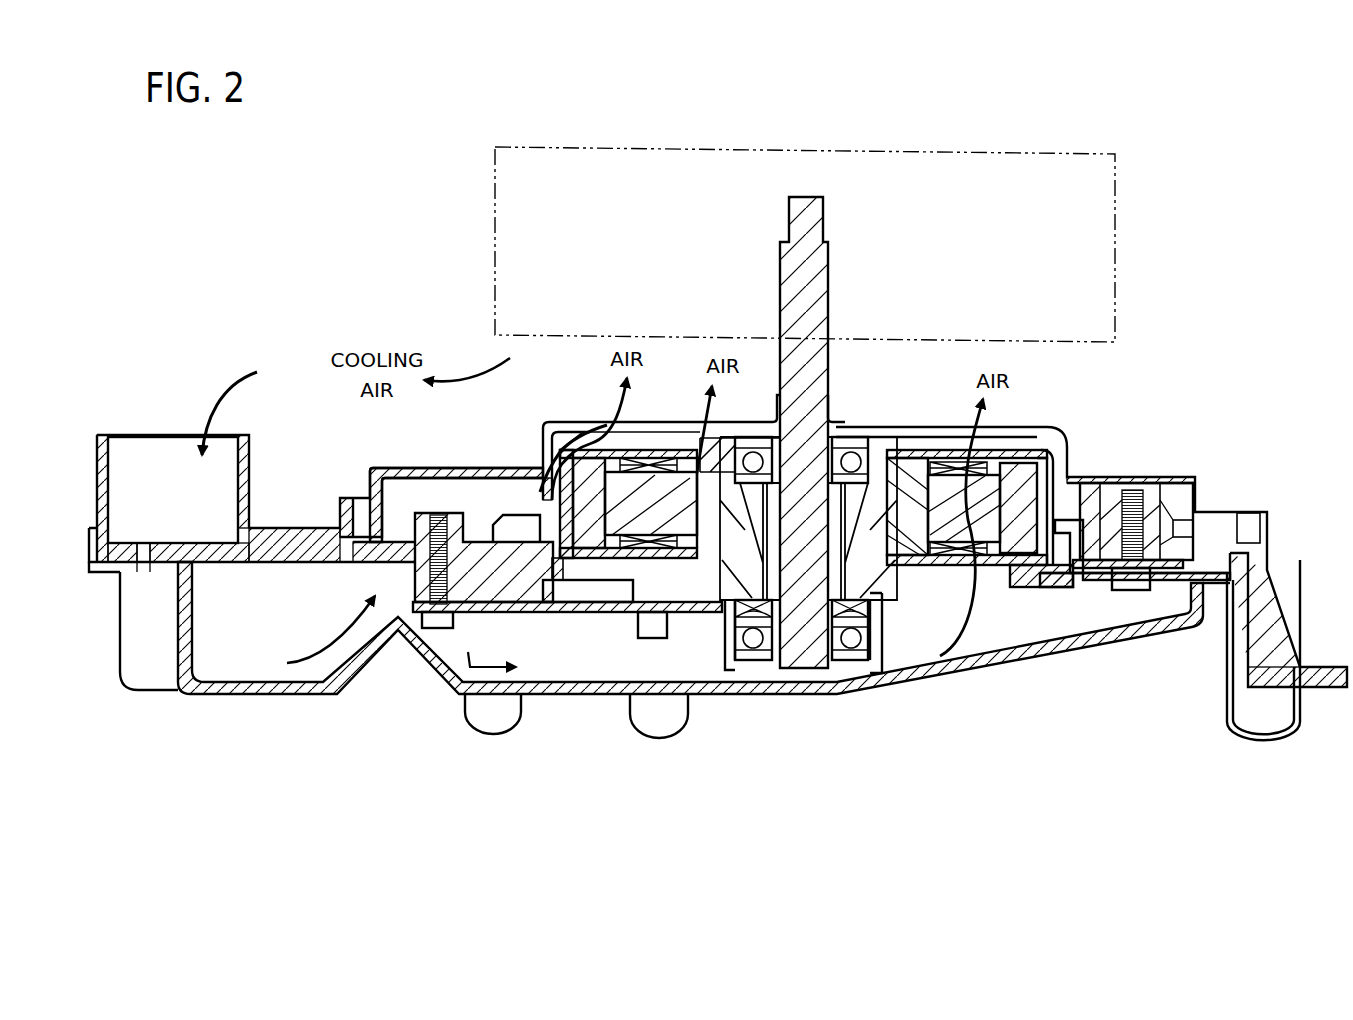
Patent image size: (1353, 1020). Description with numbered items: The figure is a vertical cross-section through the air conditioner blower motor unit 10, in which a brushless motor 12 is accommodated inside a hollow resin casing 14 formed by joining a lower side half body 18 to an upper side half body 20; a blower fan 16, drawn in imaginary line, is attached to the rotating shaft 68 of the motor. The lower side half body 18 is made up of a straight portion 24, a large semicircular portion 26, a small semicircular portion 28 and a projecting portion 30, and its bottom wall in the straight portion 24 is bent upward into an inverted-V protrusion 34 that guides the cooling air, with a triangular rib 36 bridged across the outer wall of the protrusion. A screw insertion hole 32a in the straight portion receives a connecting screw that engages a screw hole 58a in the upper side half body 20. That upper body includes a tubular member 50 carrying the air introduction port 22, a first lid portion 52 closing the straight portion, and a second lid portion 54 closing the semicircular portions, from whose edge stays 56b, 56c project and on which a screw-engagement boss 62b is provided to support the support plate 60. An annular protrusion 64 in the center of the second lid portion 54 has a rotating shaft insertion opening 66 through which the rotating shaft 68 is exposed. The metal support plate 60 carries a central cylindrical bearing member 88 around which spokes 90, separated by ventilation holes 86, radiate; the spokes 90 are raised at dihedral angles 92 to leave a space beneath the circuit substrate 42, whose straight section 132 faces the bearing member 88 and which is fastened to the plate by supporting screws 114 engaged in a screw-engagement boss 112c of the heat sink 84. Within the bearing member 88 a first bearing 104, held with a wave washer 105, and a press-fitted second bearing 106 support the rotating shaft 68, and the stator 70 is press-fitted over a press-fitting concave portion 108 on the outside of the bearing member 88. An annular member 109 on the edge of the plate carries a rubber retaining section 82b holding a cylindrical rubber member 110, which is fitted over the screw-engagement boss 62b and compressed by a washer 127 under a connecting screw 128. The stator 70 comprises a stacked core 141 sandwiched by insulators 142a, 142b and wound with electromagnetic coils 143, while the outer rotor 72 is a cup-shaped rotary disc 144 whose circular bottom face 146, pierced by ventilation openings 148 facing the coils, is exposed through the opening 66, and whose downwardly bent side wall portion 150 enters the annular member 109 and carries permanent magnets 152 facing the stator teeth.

The air conditioner blower motor unit 10 is at (246, 181).
The brushless motor 12 is at (876, 438).
The casing 14 is at (147, 758).
The blower fan 16 is at (495, 180).
The lower side half body 18 is at (126, 694).
The upper side half body 20 is at (95, 490).
The air introduction port 22 is at (112, 458).
The straight portion 24 is at (246, 694).
The large semicircular portion 26 is at (729, 696).
The small semicircular portion 28 is at (1000, 660).
The projecting portion 30 is at (1195, 628).
The screw insertion hole 32a is at (148, 572).
The protrusion 34 is at (370, 668).
The rib 36 is at (409, 663).
The circuit substrate 42 is at (569, 614).
The tubular member 50 is at (250, 467).
The first lid portion 52 is at (234, 552).
The second lid portion 54 is at (440, 470).
The stay 56b is at (1334, 672).
The stay 56c is at (657, 738).
The screw hole 58a is at (138, 550).
The support plate 60 is at (1070, 606).
The screw-engagement boss 62b is at (1168, 500).
The annular protrusion 64 is at (546, 432).
The rotating shaft insertion opening 66 is at (600, 440).
The rotating shaft 68 is at (803, 216).
The stator 70 is at (893, 472).
The rotor 72 is at (1004, 428).
The rubber retaining section 82b is at (1200, 531).
The heat sink 84 is at (495, 527).
The ventilation holes 86 is at (727, 602).
The bearing member 88 is at (882, 655).
The spokes 90 is at (632, 578).
The dihedral angles 92 is at (995, 588).
The first bearing 104 is at (848, 662).
The wave washer 105 is at (764, 614).
The second bearing 106 is at (849, 435).
The press-fitting concave portion 108 is at (870, 517).
The annular member 109 is at (1090, 570).
The cylindrical rubber member 110 is at (1236, 563).
The screw-engagement boss 112c is at (418, 500).
The supporting screw 114 is at (433, 630).
The washer 127 is at (1215, 610).
The connecting screw 128 is at (1140, 598).
The straight section 132 is at (530, 614).
The stacked core 141 is at (673, 473).
The insulator 142a is at (712, 550).
The insulator 142b is at (704, 453).
The electromagnetic coils 143 is at (643, 462).
The rotary disc 144 is at (1180, 390).
The circular bottom face 146 is at (1015, 458).
The ventilation openings 148 is at (950, 380).
The side wall portion 150 is at (1078, 487).
The permanent magnets 152 is at (1022, 556).